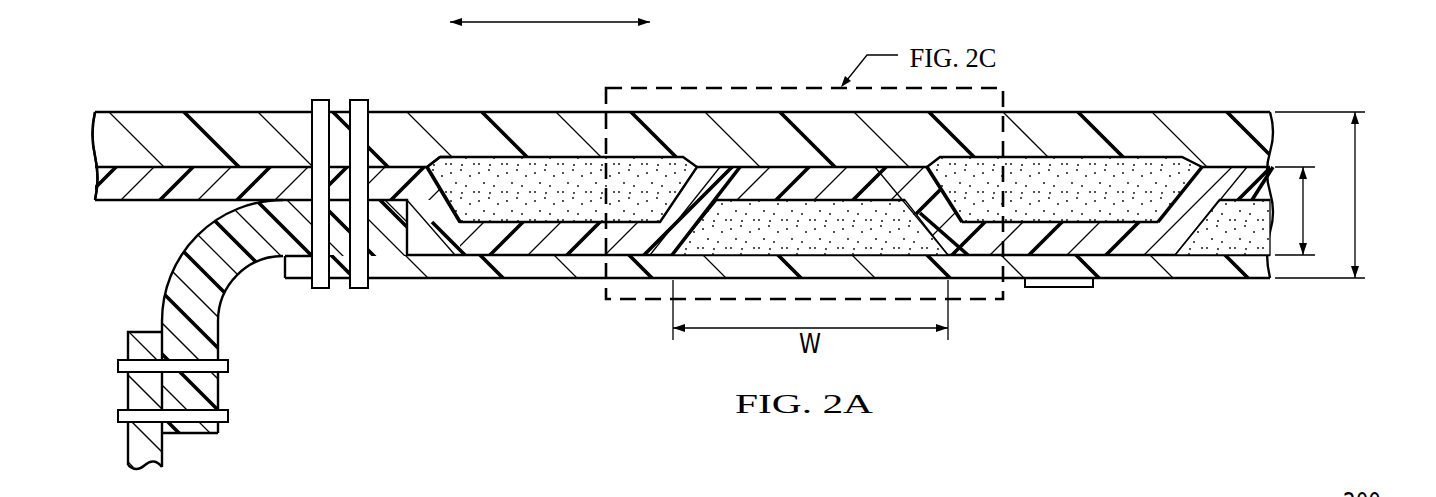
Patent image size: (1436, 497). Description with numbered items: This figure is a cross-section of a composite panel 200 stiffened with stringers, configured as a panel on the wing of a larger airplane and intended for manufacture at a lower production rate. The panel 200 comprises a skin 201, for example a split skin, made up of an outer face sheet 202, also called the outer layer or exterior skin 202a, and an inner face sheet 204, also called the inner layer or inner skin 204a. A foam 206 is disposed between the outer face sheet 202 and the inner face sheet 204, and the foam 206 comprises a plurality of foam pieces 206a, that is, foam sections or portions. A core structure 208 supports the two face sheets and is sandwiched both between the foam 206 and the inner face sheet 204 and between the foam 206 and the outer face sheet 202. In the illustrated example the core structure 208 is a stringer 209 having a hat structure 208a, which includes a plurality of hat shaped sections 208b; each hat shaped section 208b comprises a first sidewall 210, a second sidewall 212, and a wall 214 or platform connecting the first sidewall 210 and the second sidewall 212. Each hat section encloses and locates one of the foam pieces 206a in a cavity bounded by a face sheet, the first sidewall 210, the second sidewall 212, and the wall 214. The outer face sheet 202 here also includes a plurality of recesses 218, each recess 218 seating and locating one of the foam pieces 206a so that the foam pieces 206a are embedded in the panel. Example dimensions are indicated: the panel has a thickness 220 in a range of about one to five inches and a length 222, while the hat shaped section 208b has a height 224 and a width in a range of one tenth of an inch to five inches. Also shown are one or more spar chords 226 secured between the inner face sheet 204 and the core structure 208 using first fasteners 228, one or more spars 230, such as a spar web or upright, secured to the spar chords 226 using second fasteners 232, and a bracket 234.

The panel 200 is at (712, 257).
The skin 201 is at (724, 183).
The outer face sheet 202 is at (692, 165).
The exterior skin 202a is at (1115, 120).
The inner face sheet 204 is at (777, 294).
The inner skin 204a is at (1200, 268).
The foam 206 is at (791, 240).
The foam pieces 206a is at (1032, 202).
The core structure 208 is at (688, 228).
The hat structure 208a is at (527, 258).
The hat shaped sections 208b is at (452, 258).
The stringer 209 is at (688, 228).
The first sidewall 210 is at (684, 212).
The second sidewall 212 is at (938, 222).
The wall 214 is at (800, 166).
The recesses 218 is at (430, 160).
The thickness 220 is at (1357, 193).
The length 222 is at (549, 26).
The height 224 is at (1308, 212).
The spar chords 226 is at (220, 322).
The first fasteners 228 is at (320, 98).
The spars 230 is at (162, 445).
The second fasteners 232 is at (228, 366).
The bracket 234 is at (1072, 289).